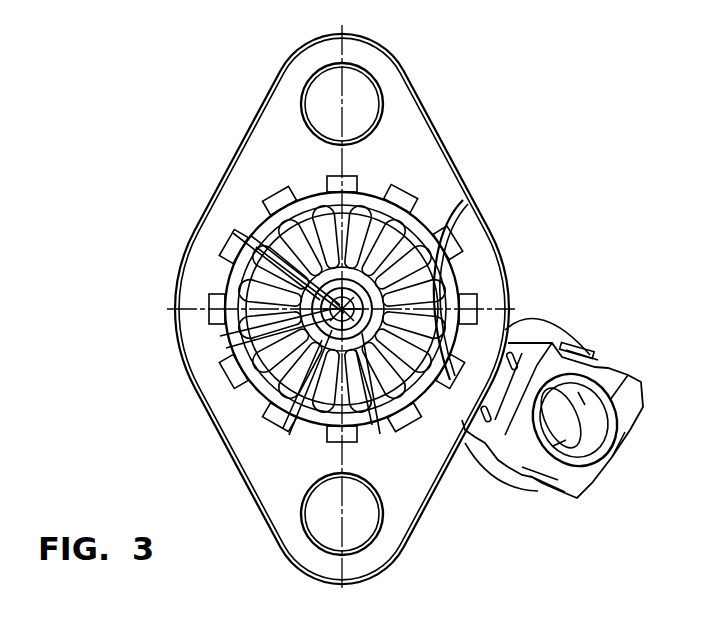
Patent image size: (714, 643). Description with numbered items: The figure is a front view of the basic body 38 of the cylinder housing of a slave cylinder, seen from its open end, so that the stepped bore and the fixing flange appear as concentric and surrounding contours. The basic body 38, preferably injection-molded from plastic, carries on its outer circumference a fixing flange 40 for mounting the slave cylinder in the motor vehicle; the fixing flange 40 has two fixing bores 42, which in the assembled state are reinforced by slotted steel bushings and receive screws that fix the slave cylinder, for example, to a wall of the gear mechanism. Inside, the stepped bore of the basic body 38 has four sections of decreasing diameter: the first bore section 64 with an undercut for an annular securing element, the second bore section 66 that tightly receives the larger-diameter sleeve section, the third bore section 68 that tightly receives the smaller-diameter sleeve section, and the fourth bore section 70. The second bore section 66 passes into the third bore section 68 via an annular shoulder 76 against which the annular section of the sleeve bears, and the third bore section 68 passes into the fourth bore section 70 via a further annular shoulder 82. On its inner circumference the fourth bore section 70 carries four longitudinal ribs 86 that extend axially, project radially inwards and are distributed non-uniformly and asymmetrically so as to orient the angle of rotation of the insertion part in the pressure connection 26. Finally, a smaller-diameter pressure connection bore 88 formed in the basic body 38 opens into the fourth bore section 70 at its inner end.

The pressure connection 26 is at (583, 423).
The basic body 38 is at (500, 239).
The fixing flange 40 is at (423, 125).
The fixing bores 42 is at (304, 101).
The first bore section 64 is at (398, 196).
The second bore section 66 is at (452, 215).
The third bore section 68 is at (292, 420).
The fourth bore section 70 is at (368, 415).
The annular shoulder 76 is at (423, 399).
The annular shoulder 82 is at (266, 398).
The longitudinal ribs 86 is at (260, 240).
The pressure connection bore 88 is at (440, 268).